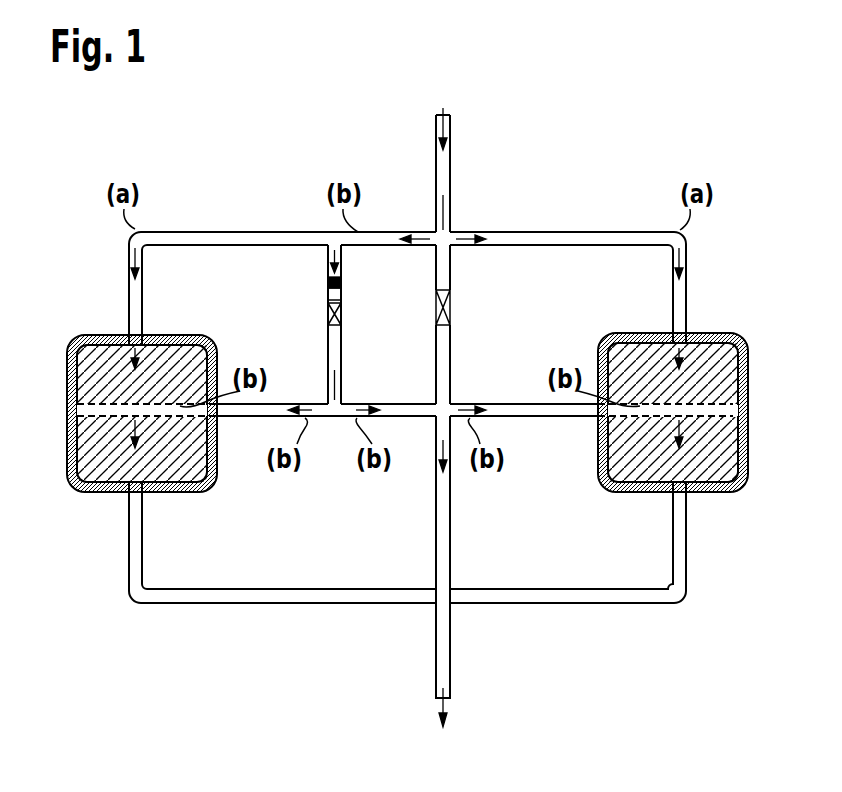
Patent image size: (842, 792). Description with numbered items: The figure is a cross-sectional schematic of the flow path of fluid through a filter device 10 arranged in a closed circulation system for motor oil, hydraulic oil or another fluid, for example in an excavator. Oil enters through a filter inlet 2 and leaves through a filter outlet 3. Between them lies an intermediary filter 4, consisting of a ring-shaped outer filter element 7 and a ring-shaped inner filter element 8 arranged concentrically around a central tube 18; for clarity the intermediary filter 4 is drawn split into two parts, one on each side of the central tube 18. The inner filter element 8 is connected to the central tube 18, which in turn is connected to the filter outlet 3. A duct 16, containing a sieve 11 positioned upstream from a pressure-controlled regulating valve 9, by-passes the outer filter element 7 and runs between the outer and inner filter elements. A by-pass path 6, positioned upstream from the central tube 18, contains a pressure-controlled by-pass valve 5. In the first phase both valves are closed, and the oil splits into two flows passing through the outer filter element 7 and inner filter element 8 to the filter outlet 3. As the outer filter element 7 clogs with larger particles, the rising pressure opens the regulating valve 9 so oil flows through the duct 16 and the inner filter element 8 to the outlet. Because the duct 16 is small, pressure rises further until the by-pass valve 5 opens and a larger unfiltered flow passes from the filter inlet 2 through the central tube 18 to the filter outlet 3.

The filter inlet 2 is at (448, 157).
The filter outlet 3 is at (451, 674).
The intermediary filter 4 is at (62, 328).
The pressure-controlled by-pass valve 5 is at (451, 314).
The by-pass path 6 is at (447, 271).
The outer filter element 7 is at (95, 384).
The inner filter element 8 is at (95, 463).
The pressure-controlled regulating valve 9 is at (342, 317).
The filter device 10 is at (207, 207).
The sieve 11 is at (342, 284).
The duct 16 is at (335, 350).
The central tube 18 is at (446, 346).